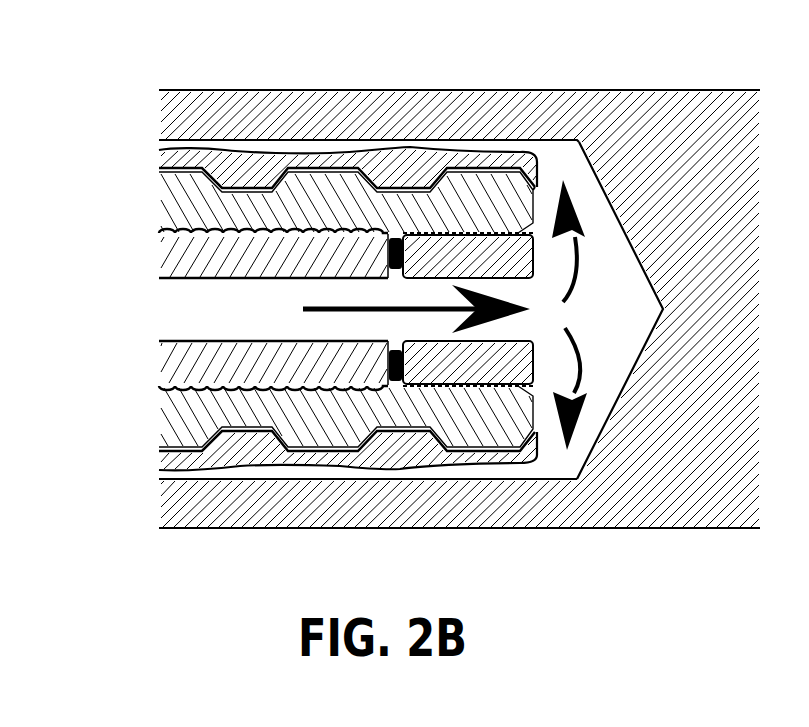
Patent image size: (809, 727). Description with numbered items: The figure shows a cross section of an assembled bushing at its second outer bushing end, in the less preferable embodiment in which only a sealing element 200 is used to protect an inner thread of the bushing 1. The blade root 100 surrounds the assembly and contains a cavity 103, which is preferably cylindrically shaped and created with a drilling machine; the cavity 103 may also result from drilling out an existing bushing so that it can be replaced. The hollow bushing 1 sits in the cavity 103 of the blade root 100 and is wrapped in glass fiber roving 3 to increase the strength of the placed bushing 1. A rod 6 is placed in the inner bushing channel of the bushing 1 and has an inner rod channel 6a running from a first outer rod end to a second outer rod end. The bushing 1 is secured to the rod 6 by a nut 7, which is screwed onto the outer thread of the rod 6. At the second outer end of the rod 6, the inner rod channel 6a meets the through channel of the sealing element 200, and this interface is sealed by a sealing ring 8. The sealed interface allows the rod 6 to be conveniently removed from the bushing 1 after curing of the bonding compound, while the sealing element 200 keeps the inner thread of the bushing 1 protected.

The bushing 1 is at (173, 190).
The glass fiber roving 3 is at (220, 162).
The rod 6 is at (177, 250).
The inner rod channel 6a is at (177, 305).
The nut 7 is at (403, 383).
The sealing ring 8 is at (401, 245).
The blade root 100 is at (360, 102).
The cavity 103 is at (617, 290).
The sealing element 200 is at (490, 253).